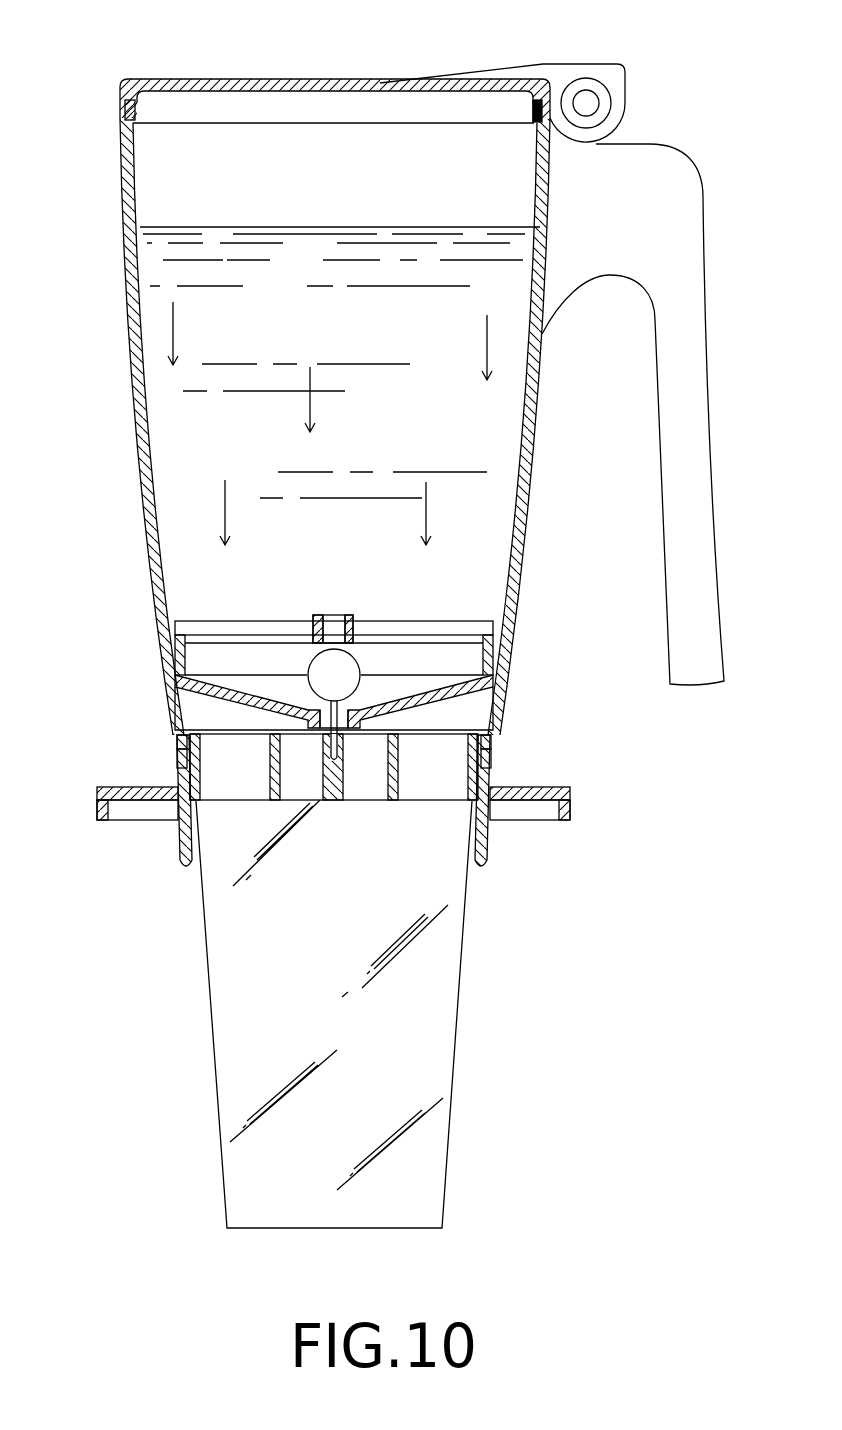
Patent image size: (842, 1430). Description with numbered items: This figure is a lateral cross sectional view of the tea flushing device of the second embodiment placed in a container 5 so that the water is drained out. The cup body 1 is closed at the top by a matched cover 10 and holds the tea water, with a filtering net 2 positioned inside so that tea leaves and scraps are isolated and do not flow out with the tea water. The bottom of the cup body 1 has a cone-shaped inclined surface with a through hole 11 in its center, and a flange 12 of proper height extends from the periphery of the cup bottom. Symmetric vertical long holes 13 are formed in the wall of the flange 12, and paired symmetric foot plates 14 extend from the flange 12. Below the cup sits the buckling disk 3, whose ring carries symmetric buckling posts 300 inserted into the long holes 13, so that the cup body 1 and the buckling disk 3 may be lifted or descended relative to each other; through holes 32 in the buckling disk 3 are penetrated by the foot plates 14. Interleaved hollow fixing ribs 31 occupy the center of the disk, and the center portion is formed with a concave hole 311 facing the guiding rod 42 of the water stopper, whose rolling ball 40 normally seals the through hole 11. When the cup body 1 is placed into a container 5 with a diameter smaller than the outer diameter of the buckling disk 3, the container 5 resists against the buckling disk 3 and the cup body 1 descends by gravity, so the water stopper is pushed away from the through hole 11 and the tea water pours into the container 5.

The cover 10 is at (205, 78).
The cup body 1 is at (128, 400).
The filtering net 2 is at (377, 631).
The metal rolling ball 40 is at (298, 657).
The guiding rod 42 is at (383, 670).
The through hole 11 is at (319, 725).
The buckling posts 300 is at (178, 758).
The vertical long holes 13 is at (177, 758).
The through holes 32 is at (155, 790).
The buckling disk 3 is at (572, 808).
The foot plates 14 is at (180, 850).
The flange 12 is at (200, 765).
The fixing ribs 31 is at (305, 790).
The concave hole 311 is at (343, 741).
The container 5 is at (443, 1020).